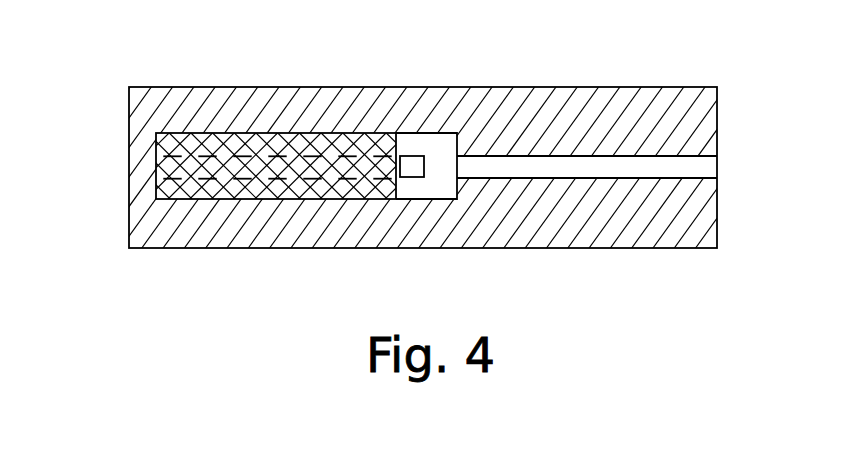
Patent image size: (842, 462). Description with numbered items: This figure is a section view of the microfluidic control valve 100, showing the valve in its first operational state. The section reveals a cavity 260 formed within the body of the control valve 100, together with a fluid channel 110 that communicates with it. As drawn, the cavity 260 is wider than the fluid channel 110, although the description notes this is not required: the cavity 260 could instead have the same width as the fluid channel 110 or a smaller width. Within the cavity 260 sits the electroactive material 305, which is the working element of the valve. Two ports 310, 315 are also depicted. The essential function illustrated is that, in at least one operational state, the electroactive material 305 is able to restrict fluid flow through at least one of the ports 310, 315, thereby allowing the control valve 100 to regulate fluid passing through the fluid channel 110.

The control valve 100 is at (665, 60).
The fluid channel 110 is at (141, 170).
The cavity 260 is at (406, 142).
The electroactive material 305 is at (275, 142).
The port 310 is at (410, 168).
The port 315 is at (455, 168).